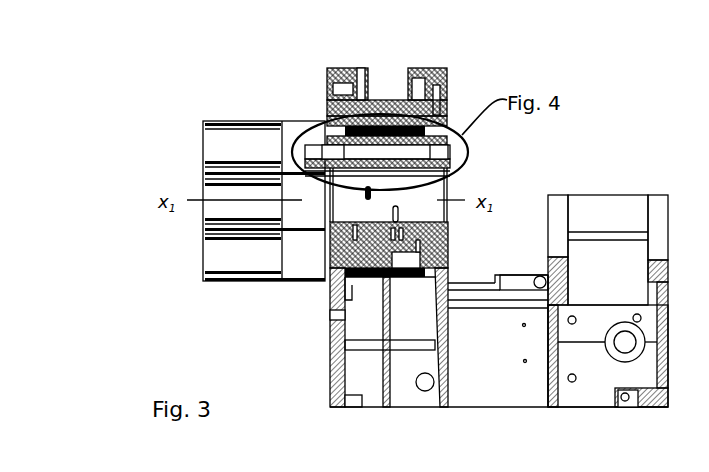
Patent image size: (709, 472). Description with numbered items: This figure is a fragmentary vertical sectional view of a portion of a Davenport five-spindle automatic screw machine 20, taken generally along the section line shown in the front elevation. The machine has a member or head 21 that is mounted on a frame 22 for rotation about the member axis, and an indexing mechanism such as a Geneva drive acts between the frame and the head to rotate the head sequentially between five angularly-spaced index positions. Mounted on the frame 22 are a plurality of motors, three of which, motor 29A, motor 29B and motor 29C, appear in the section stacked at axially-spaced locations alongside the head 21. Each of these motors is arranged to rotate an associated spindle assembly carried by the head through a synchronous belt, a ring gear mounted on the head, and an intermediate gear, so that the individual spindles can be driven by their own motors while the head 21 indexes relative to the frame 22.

The automatic screw machine 20 is at (262, 44).
The head 21 is at (450, 233).
The frame 22 is at (328, 336).
The motor 29A is at (206, 135).
The motor 29B is at (210, 192).
The motor 29C is at (210, 258).